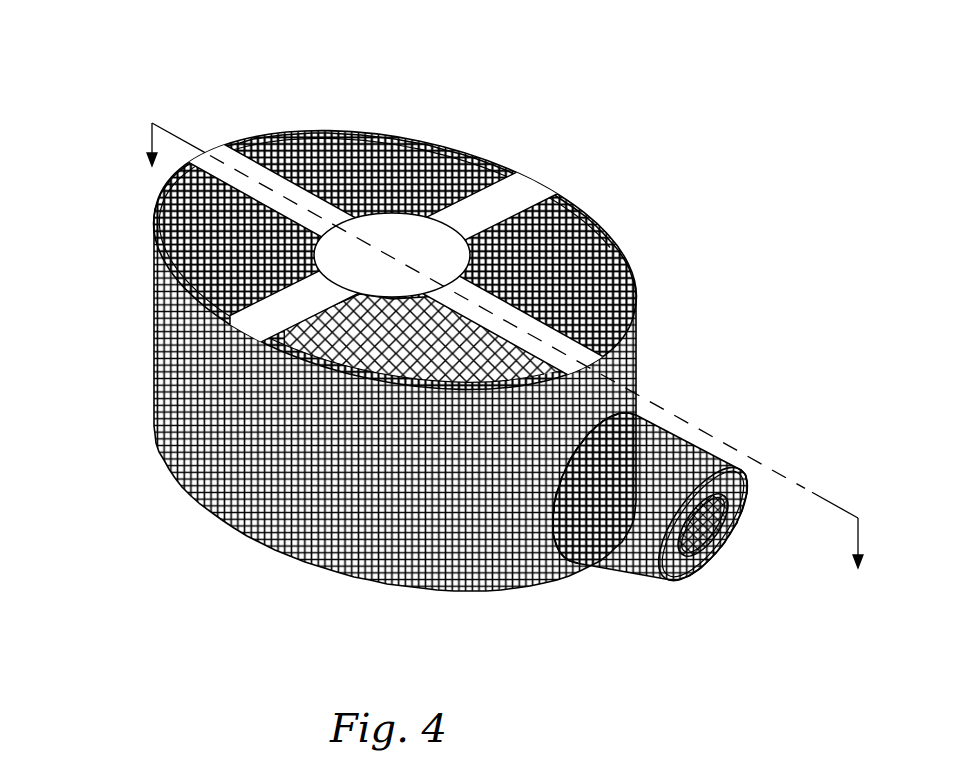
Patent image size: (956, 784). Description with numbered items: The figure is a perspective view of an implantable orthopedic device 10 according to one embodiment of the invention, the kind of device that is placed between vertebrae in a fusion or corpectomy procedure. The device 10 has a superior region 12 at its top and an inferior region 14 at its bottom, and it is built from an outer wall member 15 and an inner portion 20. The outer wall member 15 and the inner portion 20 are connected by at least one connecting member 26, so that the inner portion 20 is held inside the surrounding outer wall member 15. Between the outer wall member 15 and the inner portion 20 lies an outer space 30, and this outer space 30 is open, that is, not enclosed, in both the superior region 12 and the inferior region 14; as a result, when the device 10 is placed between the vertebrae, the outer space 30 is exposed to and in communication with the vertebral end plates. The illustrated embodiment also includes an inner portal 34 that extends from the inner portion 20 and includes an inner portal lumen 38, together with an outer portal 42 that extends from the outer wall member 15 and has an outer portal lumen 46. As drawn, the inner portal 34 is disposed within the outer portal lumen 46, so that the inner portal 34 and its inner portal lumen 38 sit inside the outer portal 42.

The implantable orthopedic device 10 is at (116, 66).
The superior region 12 is at (158, 201).
The inferior region 14 is at (158, 419).
The outer wall member 15 is at (153, 346).
The inner portion 20 is at (402, 188).
The connecting member 26 is at (158, 291).
The outer space 30 is at (335, 163).
The inner portal 34 is at (742, 499).
The inner portal lumen 38 is at (727, 549).
The outer portal 42 is at (637, 576).
The outer portal lumen 46 is at (700, 578).